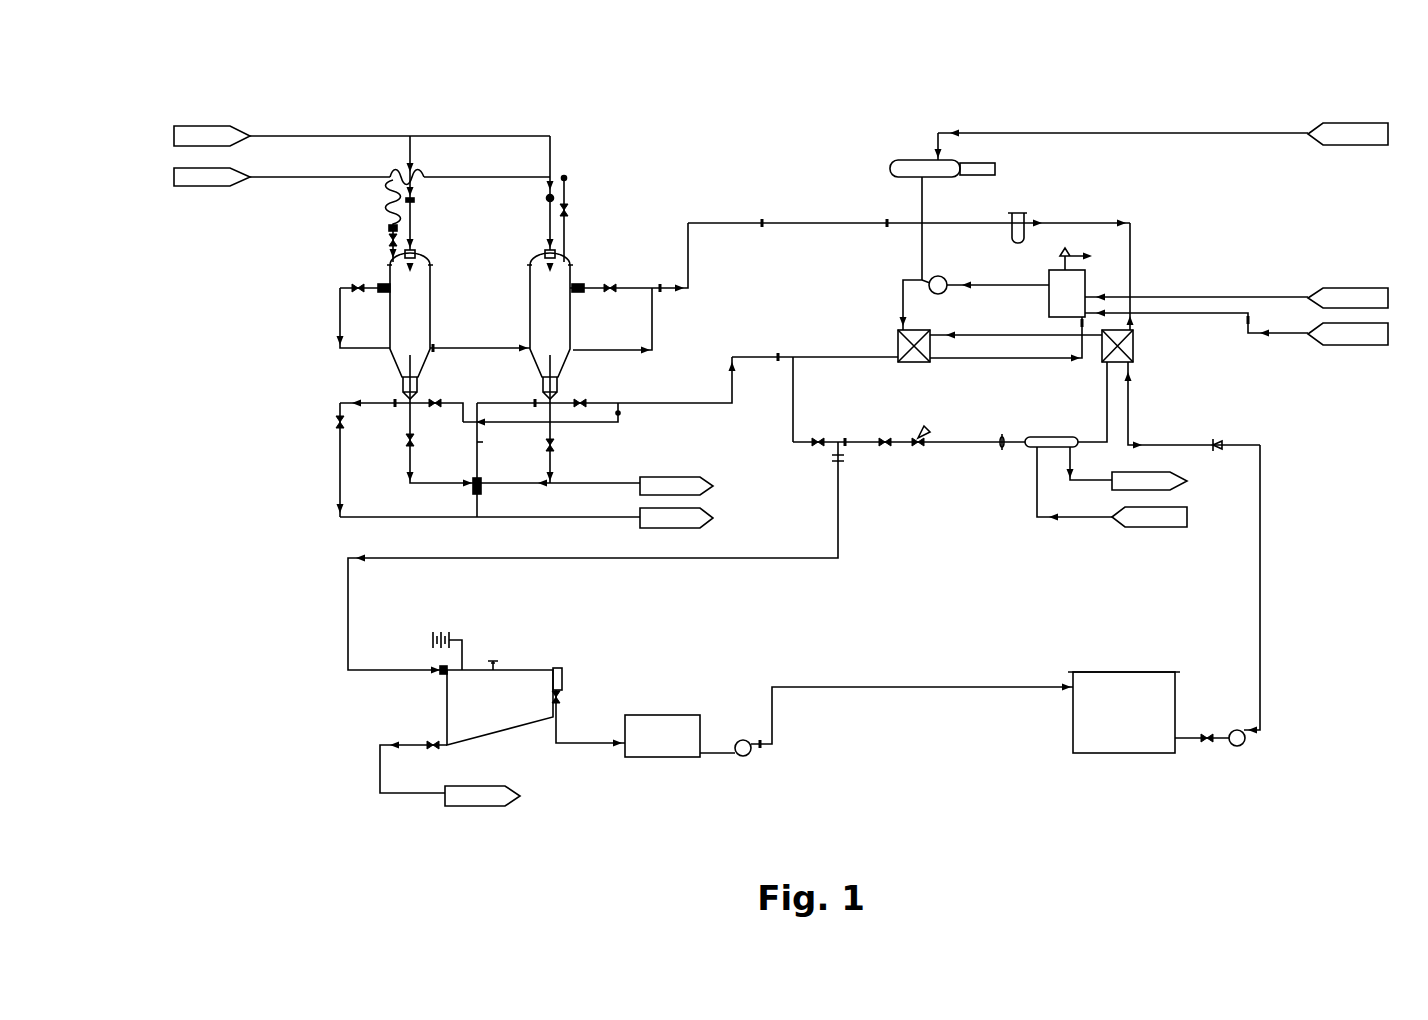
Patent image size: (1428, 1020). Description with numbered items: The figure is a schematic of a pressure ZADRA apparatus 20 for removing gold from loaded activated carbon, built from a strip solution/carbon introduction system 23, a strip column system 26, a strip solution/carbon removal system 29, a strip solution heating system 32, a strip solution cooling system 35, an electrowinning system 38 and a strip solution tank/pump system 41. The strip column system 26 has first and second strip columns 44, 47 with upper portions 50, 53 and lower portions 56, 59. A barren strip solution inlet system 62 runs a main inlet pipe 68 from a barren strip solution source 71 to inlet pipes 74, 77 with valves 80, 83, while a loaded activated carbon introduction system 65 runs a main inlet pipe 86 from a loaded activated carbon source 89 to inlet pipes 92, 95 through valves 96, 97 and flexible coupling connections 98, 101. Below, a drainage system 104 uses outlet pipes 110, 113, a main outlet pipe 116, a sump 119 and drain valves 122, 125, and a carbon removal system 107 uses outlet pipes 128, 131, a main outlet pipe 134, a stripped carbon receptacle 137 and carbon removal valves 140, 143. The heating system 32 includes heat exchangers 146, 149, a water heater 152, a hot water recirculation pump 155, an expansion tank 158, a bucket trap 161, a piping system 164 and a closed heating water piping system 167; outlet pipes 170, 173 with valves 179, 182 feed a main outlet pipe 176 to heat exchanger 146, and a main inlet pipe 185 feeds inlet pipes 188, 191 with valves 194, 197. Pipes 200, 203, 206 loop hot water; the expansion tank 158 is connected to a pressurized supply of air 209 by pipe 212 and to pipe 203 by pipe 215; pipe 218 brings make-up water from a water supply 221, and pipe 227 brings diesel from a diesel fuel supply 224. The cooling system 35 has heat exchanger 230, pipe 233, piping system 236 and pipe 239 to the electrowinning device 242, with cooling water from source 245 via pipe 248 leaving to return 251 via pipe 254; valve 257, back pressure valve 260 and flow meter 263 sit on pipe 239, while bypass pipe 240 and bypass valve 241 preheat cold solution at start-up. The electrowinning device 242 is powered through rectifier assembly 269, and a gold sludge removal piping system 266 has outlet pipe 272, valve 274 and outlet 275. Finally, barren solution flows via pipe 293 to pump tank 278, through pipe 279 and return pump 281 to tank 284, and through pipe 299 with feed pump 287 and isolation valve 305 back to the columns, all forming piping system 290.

The pressure ZADRA apparatus 20 is at (1040, 62).
The strip solution/carbon introduction system 23 is at (504, 69).
The strip column system 26 is at (250, 250).
The strip solution/carbon removal system 29 is at (722, 452).
The strip solution heating system 32 is at (1176, 212).
The strip solution cooling system 35 is at (1180, 408).
The electrowinning system 38 is at (618, 633).
The strip solution tank/pump system 41 is at (918, 800).
The first strip column 44 is at (582, 273).
The second strip column 47 is at (444, 273).
The upper portion of first strip column 50 is at (529, 306).
The upper portion of second strip column 53 is at (431, 302).
The lower portion of first strip column 56 is at (566, 363).
The lower portion of second strip column 59 is at (426, 365).
The barren strip solution inlet system 62 is at (560, 130).
The loaded activated carbon introduction system 65 is at (374, 200).
The main inlet pipe 68 is at (343, 135).
The barren strip solution source 71 is at (218, 131).
The inlet pipe 74 is at (552, 151).
The inlet pipe 77 is at (413, 168).
The valve 80 is at (548, 198).
The valve 83 is at (414, 206).
The main inlet pipe 86 is at (270, 177).
The loaded activated carbon source 89 is at (222, 188).
The inlet pipe 92 is at (566, 186).
The inlet pipe 95 is at (390, 224).
The valve 96 is at (568, 212).
The valve 97 is at (390, 240).
The flexible coupling connection 98 is at (399, 172).
The flexible coupling connection 101 is at (388, 183).
The strip column solution drainage system 104 is at (586, 459).
The stripped activated carbon removal system 107 is at (282, 432).
The outlet pipe 110 is at (547, 470).
The outlet pipe 113 is at (406, 468).
The main outlet pipe 116 is at (626, 485).
The sump 119 is at (670, 476).
The drain valve 122 is at (556, 443).
The drain valve 125 is at (404, 437).
The outlet pipe 128 is at (484, 442).
The outlet pipe 131 is at (338, 490).
The main outlet pipe 134 is at (404, 519).
The stripped carbon receptacle 137 is at (684, 530).
The carbon removal valve 140 is at (483, 488).
The carbon removal valve 143 is at (334, 420).
The heat exchanger 146 is at (1135, 346).
The heat exchanger 149 is at (897, 346).
The water heater 152 is at (1086, 285).
The hot water recirculation pump 155 is at (945, 278).
The expansion tank 158 is at (915, 160).
The bucket trap 161 is at (1016, 213).
The strip column to heating system piping system 164 is at (755, 184).
The closed heating water piping system 167 is at (878, 292).
The outlet pipe 170 is at (636, 287).
The outlet pipe 173 is at (338, 318).
The main outlet pipe 176 is at (831, 222).
The valve 179 is at (612, 292).
The valve 182 is at (372, 288).
The main inlet pipe 185 is at (815, 358).
The inlet pipe 188 is at (614, 401).
The inlet pipe 191 is at (465, 401).
The valve 194 is at (586, 400).
The valve 197 is at (436, 408).
The pipe 200 is at (1020, 286).
The pipe 203 is at (902, 296).
The pipe 206 is at (1025, 359).
The pressurized supply of air 209 is at (1334, 146).
The pipe 212 is at (1100, 132).
The pipe 215 is at (924, 210).
The pipe 218 is at (1226, 316).
The water supply 221 is at (1350, 346).
The diesel fuel supply 224 is at (1342, 288).
The pipe 227 is at (1228, 296).
The heat exchanger 230 is at (1048, 437).
The heating system to cooling system pipe 233 is at (1106, 382).
The cooling system to electrowinning system piping system 236 is at (950, 428).
The pipe 239 is at (840, 519).
The bypass pipe 240 is at (793, 417).
The bypass valve 241 is at (818, 448).
The electrowinning device 242 is at (520, 668).
The cooling water supply source 245 is at (1165, 528).
The pipe 248 is at (1036, 496).
The cooling water return 251 is at (1189, 481).
The pipe 254 is at (1078, 466).
The valve 257 is at (885, 436).
The back pressure valve 260 is at (916, 422).
The flow meter 263 is at (1000, 449).
The gold sludge removal piping system 266 is at (340, 742).
The rectifier assembly 269 is at (440, 628).
The outlet pipe 272 is at (375, 767).
The valve 274 is at (431, 741).
The outlet 275 is at (462, 806).
The barren strip solution pump tank 278 is at (656, 715).
The pipe 279 is at (900, 688).
The barren strip solution return pump 281 is at (745, 739).
The barren strip solution tank 284 is at (1178, 683).
The strip solution feed pump 287 is at (1247, 746).
The barren strip solution piping system 290 is at (950, 652).
The pipe 293 is at (589, 750).
The pipe 299 is at (1262, 592).
The valve 305 is at (1205, 734).